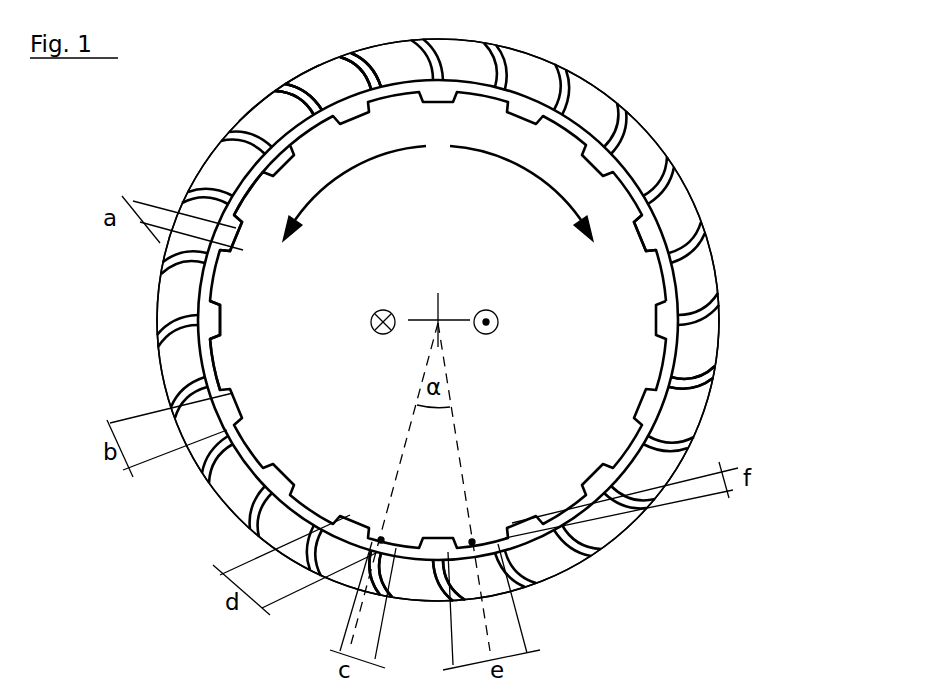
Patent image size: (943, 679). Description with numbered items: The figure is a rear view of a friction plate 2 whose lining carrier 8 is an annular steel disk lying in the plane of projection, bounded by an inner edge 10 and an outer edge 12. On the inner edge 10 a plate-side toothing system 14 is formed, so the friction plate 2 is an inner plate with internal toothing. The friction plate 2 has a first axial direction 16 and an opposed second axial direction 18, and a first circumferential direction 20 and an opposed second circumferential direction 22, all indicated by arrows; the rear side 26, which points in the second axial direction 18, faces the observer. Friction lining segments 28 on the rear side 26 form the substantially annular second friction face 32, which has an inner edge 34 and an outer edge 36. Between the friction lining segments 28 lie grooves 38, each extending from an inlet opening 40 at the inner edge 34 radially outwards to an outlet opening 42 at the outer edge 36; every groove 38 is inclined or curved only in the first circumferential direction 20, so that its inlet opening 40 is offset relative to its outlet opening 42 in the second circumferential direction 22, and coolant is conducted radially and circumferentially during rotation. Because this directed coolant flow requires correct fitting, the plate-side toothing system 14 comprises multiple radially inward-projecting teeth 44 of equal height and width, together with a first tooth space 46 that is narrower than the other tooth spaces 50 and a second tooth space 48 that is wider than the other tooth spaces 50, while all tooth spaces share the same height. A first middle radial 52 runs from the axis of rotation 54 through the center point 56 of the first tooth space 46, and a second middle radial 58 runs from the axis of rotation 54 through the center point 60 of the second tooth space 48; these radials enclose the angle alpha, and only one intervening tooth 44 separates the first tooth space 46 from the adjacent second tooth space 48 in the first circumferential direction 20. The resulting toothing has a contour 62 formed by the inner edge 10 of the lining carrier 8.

The friction plate 2 is at (752, 103).
The lining carrier 8 is at (627, 177).
The inner edge 10 is at (483, 93).
The outer edge 12 is at (618, 122).
The plate-side toothing system 14 is at (237, 240).
The first axial direction 16 is at (380, 310).
The second axial direction 18 is at (487, 310).
The first circumferential direction 20 is at (343, 173).
The second circumferential direction 22 is at (530, 180).
The rear side 26 is at (669, 309).
The friction lining segments 28 is at (327, 70).
The second friction face 32 is at (699, 340).
The inner edge 34 is at (250, 176).
The outer edge 36 is at (363, 53).
The grooves 38 is at (300, 92).
The inlet opening 40 is at (313, 107).
The outlet opening 42 is at (280, 90).
The teeth 44 is at (523, 110).
The first tooth space 46 is at (363, 553).
The second tooth space 48 is at (437, 590).
The other tooth spaces 50 is at (393, 100).
The first middle radial 52 is at (410, 402).
The axis of rotation 54 is at (437, 313).
The center point 56 is at (381, 538).
The second middle radial 58 is at (465, 405).
The center point 60 is at (472, 542).
The contour 62 is at (640, 238).